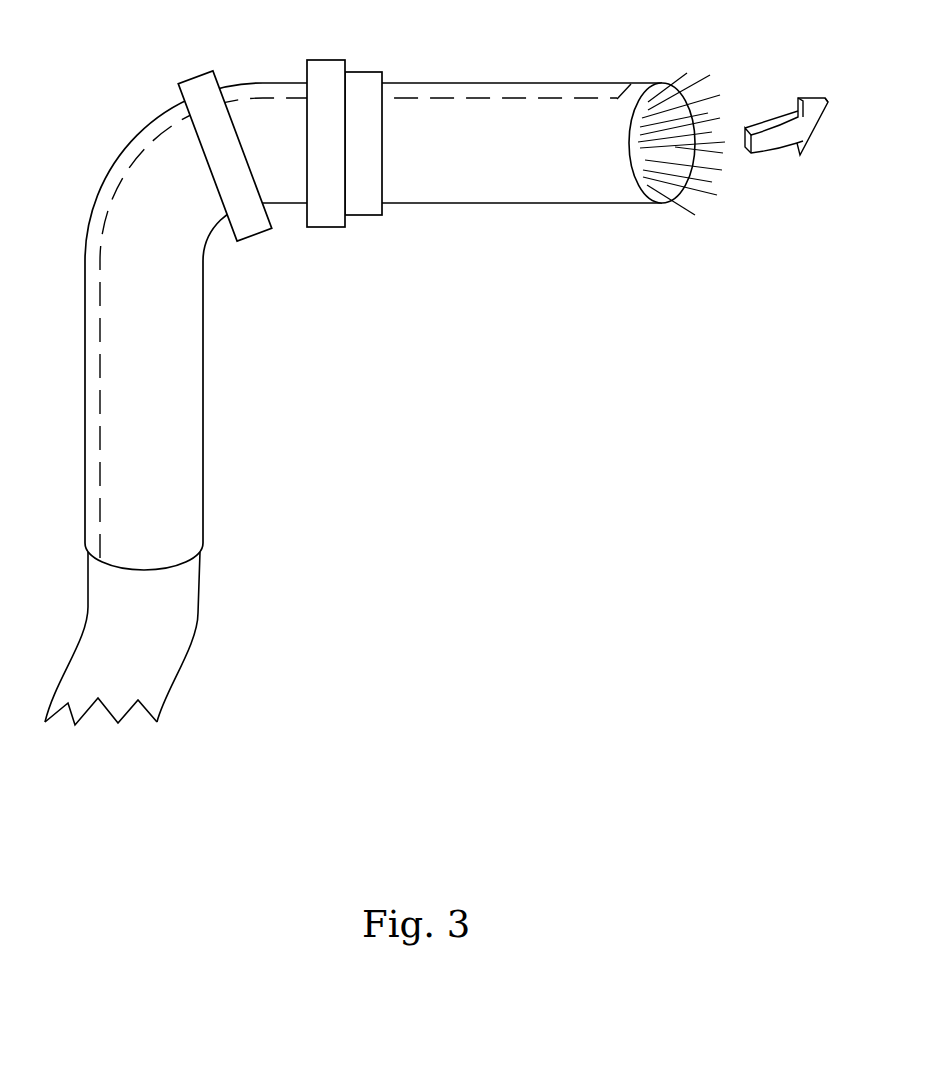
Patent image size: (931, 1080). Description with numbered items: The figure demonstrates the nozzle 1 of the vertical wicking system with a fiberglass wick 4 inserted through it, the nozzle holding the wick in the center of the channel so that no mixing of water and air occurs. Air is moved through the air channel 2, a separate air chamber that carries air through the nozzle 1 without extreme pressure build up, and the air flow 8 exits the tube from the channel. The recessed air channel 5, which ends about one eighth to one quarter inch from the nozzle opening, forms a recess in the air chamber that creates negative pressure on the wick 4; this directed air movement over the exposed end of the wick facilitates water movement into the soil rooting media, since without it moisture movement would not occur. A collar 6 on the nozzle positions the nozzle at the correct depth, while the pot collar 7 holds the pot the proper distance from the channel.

The nozzle 1 is at (203, 383).
The air channel 2 is at (85, 310).
The fiberglass wick 4 is at (195, 632).
The recessed air channel 5 is at (640, 83).
The collar 6 is at (195, 75).
The pot collar 7 is at (323, 60).
The air flow 8 is at (710, 183).